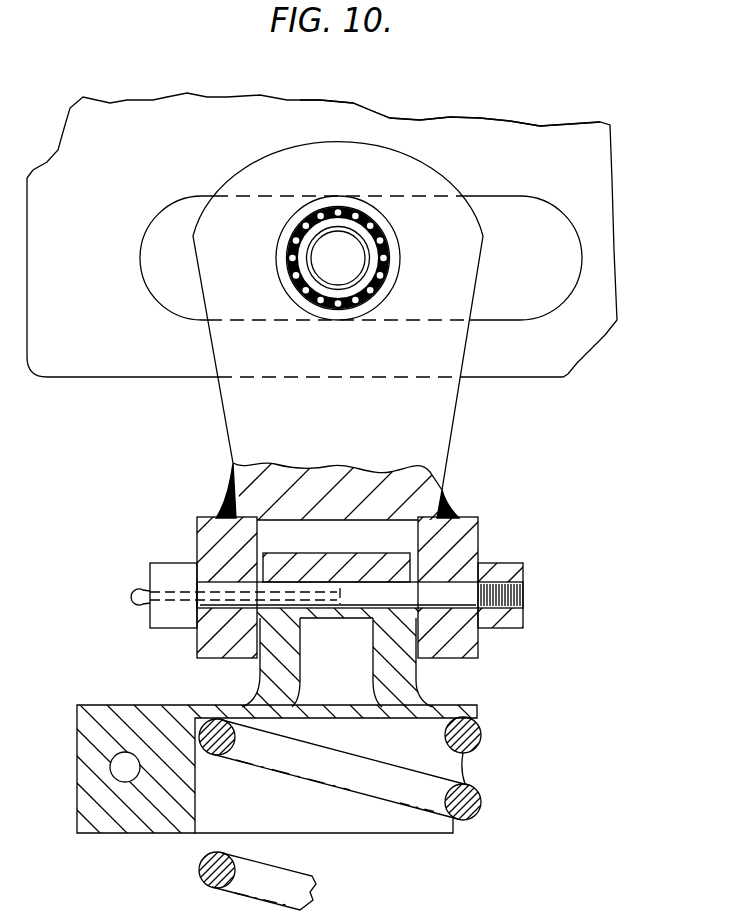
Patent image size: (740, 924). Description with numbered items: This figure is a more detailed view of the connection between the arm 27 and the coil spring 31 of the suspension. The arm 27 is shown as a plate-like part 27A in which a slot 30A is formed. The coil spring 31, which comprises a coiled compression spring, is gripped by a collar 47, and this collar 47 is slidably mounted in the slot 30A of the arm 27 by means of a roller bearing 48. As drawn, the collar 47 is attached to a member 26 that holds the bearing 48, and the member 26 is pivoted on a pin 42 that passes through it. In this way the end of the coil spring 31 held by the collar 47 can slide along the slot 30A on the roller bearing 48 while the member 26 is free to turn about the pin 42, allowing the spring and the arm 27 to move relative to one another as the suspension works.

The member 26 is at (430, 432).
The arm 27 is at (502, 368).
The part of arm 27A is at (547, 130).
The slot 30A is at (543, 300).
The coil spring 31 is at (482, 802).
The pin 42 is at (525, 592).
The collar 47 is at (120, 715).
The roller bearing 48 is at (290, 255).